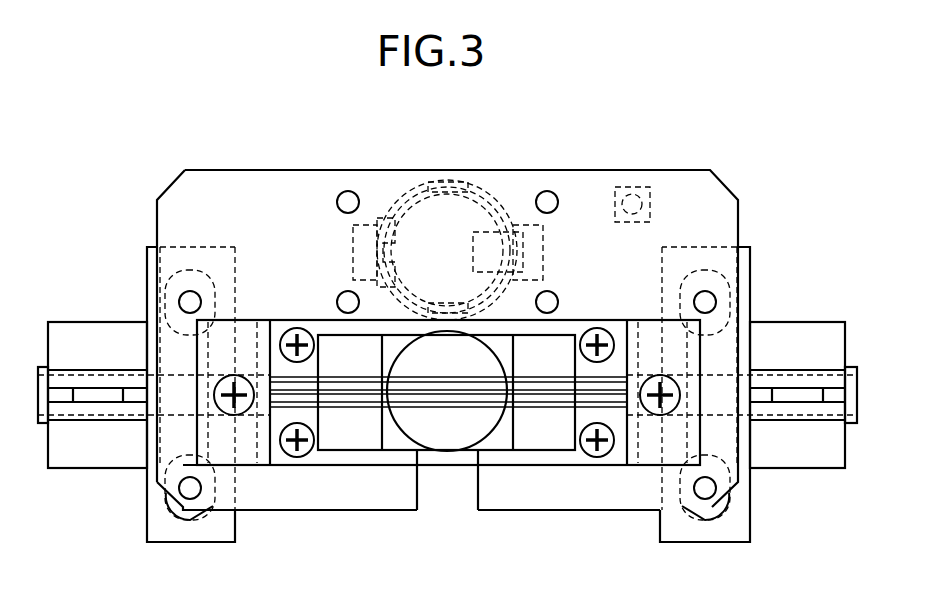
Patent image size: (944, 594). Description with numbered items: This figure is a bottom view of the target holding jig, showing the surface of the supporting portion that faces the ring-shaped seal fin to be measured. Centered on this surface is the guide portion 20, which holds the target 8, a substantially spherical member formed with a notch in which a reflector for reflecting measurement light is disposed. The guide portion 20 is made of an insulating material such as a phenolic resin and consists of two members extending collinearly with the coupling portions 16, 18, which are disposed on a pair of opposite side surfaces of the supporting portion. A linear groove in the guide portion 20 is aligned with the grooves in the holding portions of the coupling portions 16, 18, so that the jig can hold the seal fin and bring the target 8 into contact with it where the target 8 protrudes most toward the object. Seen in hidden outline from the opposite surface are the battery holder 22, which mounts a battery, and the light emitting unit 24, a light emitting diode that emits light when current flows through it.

The target 8 is at (480, 432).
The coupling portion 16 is at (78, 333).
The coupling portion 18 is at (793, 332).
The guide portion 20 is at (517, 437).
The battery holder 22 is at (415, 190).
The light emitting unit 24 is at (632, 190).